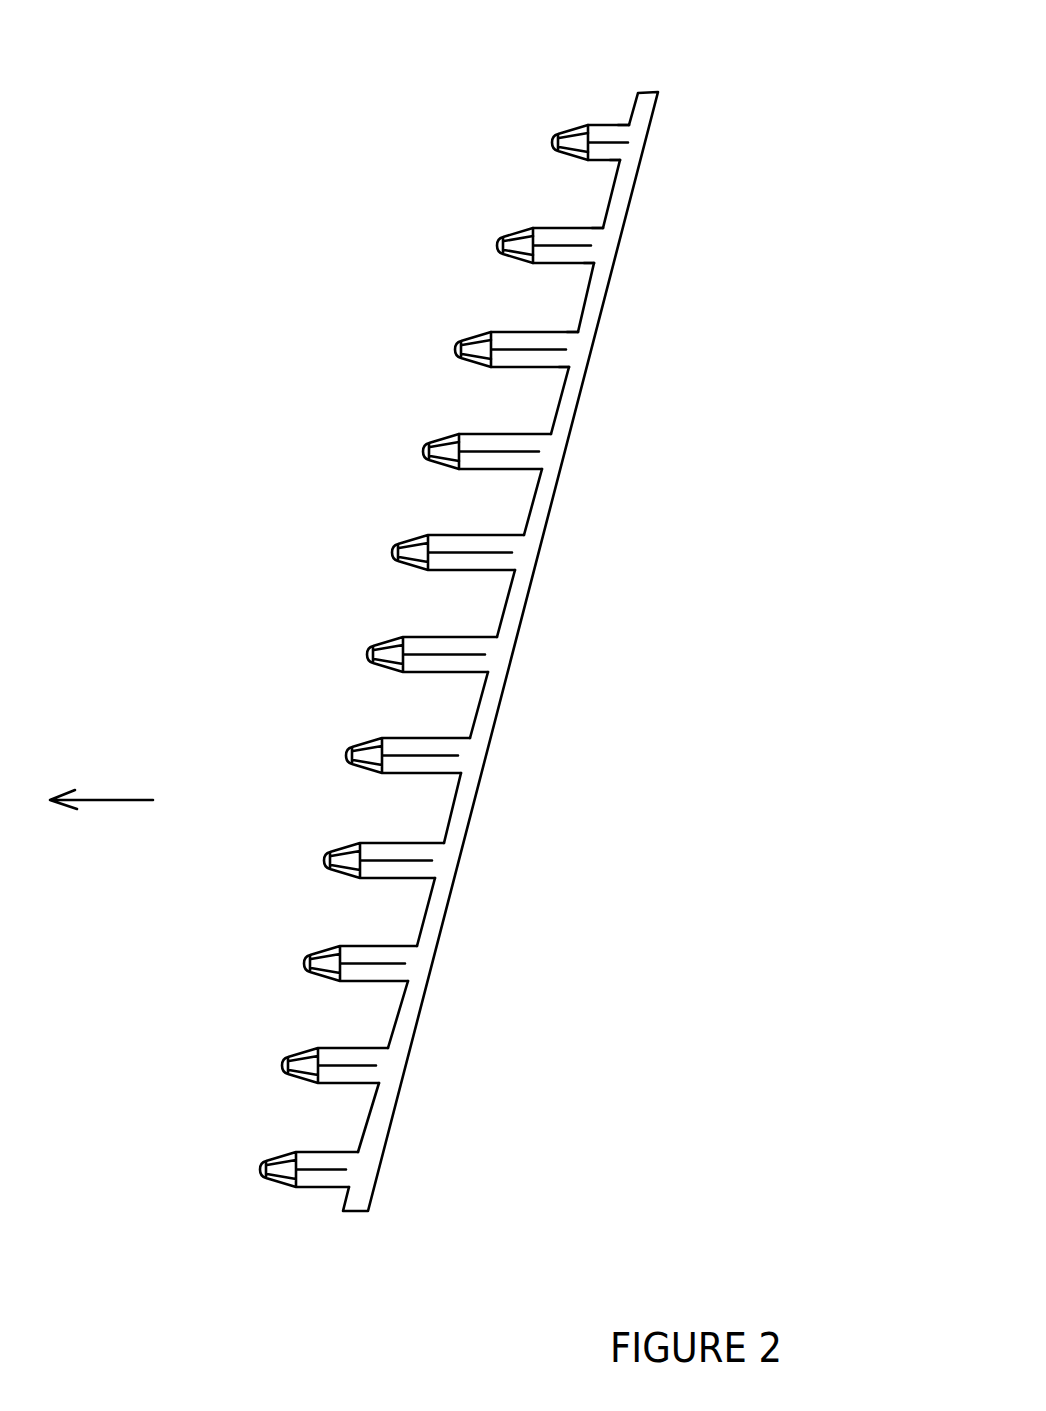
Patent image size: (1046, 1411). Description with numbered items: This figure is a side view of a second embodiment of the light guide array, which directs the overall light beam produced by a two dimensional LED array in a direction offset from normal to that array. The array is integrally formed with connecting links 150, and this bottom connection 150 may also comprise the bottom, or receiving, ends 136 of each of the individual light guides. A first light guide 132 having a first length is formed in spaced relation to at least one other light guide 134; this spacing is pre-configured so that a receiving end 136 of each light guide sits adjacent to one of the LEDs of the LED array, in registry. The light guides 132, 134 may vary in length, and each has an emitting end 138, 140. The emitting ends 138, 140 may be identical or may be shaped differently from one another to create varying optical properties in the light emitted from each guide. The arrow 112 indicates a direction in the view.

The direction of insertion 112 is at (101, 773).
The first light guide 132 is at (531, 88).
The other light guide 134 is at (559, 238).
The receiving end 136 is at (623, 153).
The emitting end 138 is at (553, 142).
The emitting end 140 is at (430, 440).
The connecting links 150 is at (563, 418).